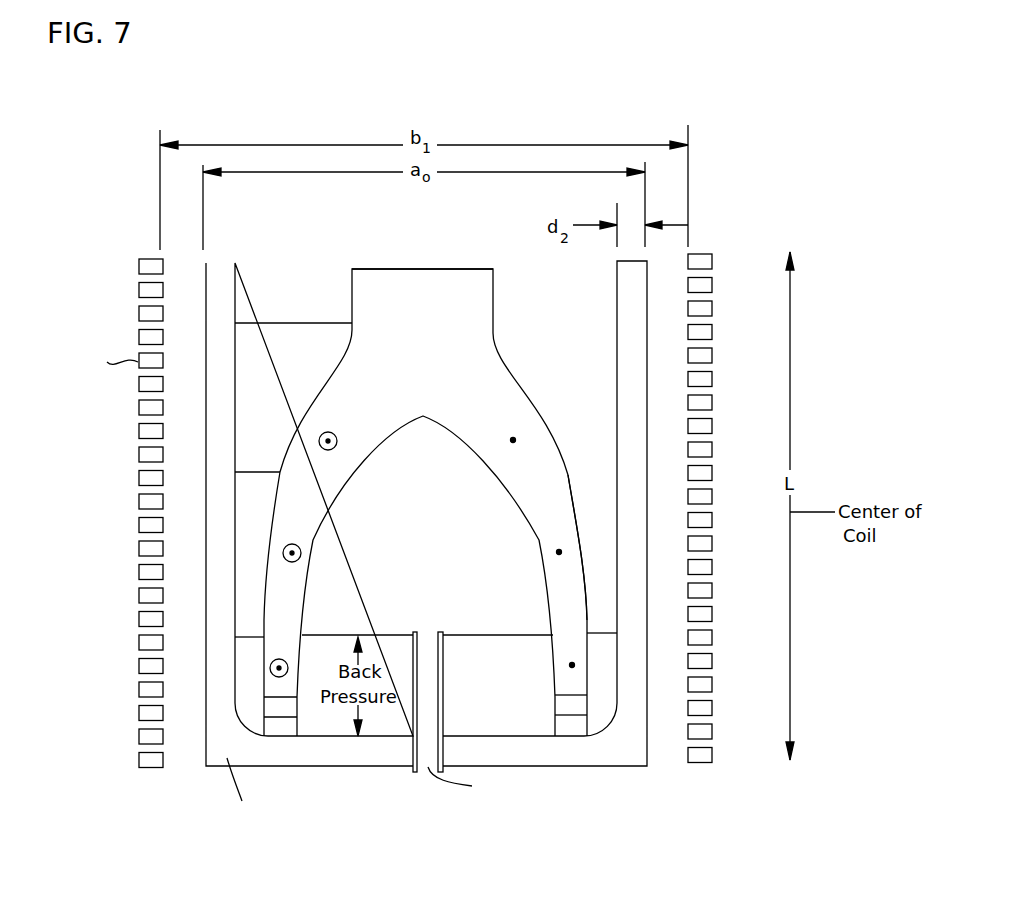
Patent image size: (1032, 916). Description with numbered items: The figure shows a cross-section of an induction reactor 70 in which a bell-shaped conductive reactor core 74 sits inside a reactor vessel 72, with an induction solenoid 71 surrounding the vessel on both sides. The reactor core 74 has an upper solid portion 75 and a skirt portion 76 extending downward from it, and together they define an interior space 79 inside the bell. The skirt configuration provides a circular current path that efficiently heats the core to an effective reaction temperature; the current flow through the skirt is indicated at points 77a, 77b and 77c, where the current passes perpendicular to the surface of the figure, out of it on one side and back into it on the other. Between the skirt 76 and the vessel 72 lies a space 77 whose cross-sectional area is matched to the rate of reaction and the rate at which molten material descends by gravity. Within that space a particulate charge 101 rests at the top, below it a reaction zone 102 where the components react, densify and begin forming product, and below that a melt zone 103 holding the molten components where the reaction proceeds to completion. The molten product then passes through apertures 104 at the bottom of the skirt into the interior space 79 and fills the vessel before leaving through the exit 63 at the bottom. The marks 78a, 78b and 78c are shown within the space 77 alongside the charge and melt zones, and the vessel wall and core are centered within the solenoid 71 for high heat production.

The reactor 70 is at (115, 680).
The induction solenoid 71 is at (143, 758).
The reactor vessel 72 is at (628, 742).
The exit 63 is at (425, 752).
The conductive reactor core 74 is at (442, 377).
The upper solid portion 75 is at (484, 307).
The skirt portion 76 is at (570, 600).
The space 77 is at (245, 602).
The current flow point 77a is at (518, 435).
The current flow point 77b is at (568, 547).
The current flow point 77c is at (578, 665).
The first point in annulus 78a is at (330, 450).
The second point in annulus 78b is at (301, 553).
The third point in annulus 78c is at (286, 660).
The interior space 79 is at (482, 503).
The particulate charge 101 is at (308, 390).
The reaction zone 102 is at (270, 507).
The melt zone 103 is at (247, 658).
The apertures 104 is at (283, 705).